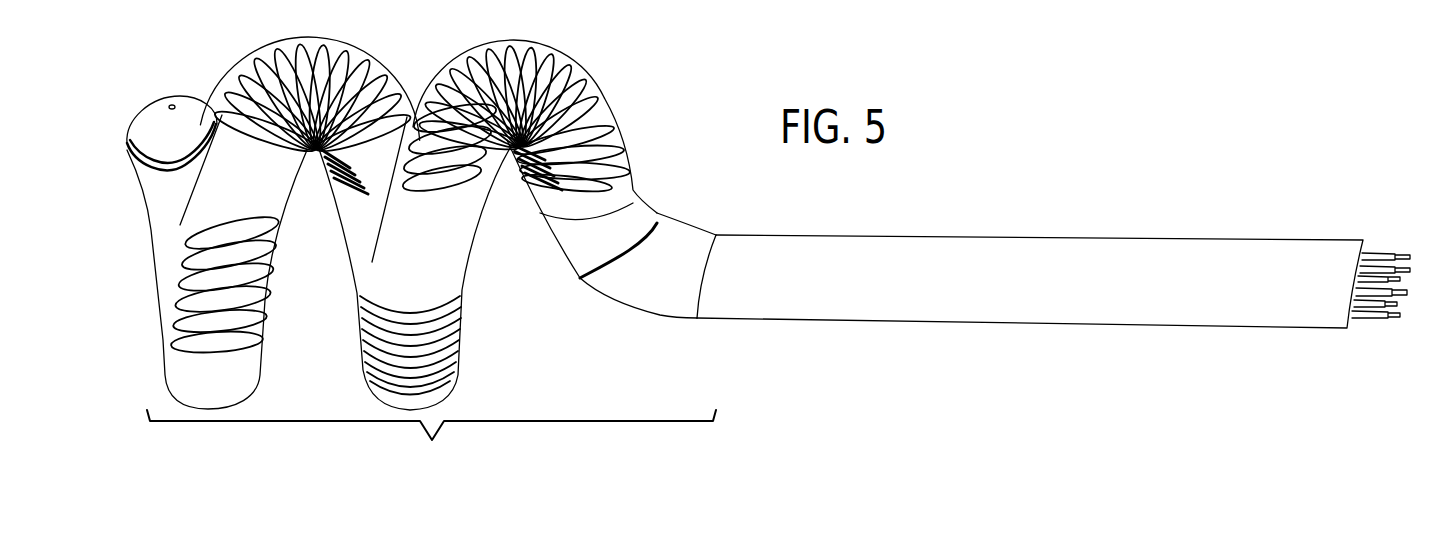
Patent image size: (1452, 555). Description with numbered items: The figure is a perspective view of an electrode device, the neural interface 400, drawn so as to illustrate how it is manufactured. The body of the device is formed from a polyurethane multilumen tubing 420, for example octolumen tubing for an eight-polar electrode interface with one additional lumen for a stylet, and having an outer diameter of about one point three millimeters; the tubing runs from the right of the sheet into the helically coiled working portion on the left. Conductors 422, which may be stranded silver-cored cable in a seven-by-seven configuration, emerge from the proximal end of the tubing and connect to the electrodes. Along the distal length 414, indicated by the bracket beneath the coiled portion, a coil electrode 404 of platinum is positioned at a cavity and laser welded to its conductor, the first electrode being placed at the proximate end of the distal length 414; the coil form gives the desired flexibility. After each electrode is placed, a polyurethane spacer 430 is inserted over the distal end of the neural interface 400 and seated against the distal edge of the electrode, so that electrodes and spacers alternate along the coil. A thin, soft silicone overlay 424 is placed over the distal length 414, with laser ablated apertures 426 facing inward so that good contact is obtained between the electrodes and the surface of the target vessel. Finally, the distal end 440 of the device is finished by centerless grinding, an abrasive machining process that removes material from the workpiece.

The neural interface 400 is at (88, 278).
The coil electrode 404 is at (587, 137).
The distal length 414 is at (431, 444).
The multilumen tubing 420 is at (1037, 252).
The conductors 422 is at (1383, 252).
The overlay 424 is at (633, 212).
The apertures 426 is at (553, 167).
The polyurethane spacer 430 is at (532, 62).
The distal end 440 is at (165, 120).